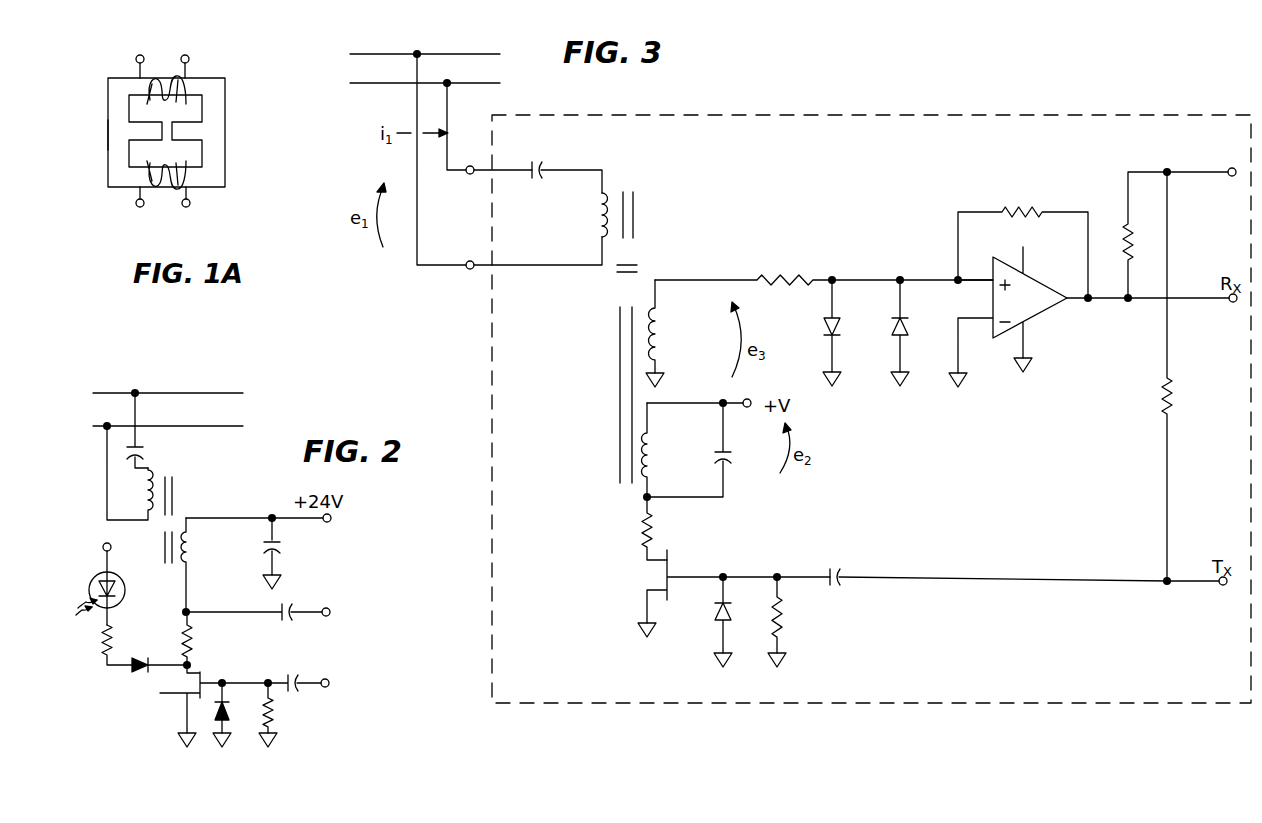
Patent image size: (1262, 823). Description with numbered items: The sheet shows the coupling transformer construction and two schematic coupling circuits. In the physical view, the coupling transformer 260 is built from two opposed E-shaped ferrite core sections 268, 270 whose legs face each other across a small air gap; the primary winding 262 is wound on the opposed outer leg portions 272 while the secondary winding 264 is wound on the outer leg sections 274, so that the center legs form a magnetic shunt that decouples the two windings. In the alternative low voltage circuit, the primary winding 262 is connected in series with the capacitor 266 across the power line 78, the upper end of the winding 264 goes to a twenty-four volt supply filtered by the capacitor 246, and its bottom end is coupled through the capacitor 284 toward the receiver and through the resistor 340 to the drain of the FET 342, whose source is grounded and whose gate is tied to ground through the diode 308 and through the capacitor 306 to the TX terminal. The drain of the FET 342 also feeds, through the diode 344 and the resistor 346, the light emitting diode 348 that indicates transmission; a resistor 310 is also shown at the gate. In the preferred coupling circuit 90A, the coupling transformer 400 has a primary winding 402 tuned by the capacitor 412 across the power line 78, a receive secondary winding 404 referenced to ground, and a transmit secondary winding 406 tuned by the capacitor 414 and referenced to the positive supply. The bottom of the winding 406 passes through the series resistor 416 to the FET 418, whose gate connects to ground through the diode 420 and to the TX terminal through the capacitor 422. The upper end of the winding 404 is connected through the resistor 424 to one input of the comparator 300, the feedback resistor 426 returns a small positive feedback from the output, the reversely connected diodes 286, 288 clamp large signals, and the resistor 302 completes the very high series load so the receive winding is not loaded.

In FIG. 2, the power line 78 is at (229, 378).
In FIG. 3, the power line 78 is at (388, 37).
In FIG. 1A, the coupling transformer 260 is at (276, 144).
In FIG. 2, the coupling transformer 260 is at (212, 501).
In FIG. 1A, the primary winding 262 is at (182, 36).
In FIG. 2, the primary winding 262 is at (130, 473).
In FIG. 1A, the secondary winding 264 is at (180, 197).
In FIG. 2, the secondary winding 264 is at (190, 557).
In FIG. 2, the capacitor 266 is at (143, 450).
In FIG. 1A, the E-shaped ferrite core section 268 is at (115, 135).
In FIG. 1A, the E-shaped ferrite core section 270 is at (220, 110).
In FIG. 1A, the outer leg portions 272 is at (197, 87).
In FIG. 1A, the outer leg sections 274 is at (123, 182).
In FIG. 2, the capacitor 246 is at (280, 544).
In FIG. 2, the capacitor 284 is at (293, 607).
In FIG. 2, the capacitor 306 is at (287, 681).
In FIG. 2, the diode 308 is at (228, 722).
In FIG. 2, the resistor 310 is at (273, 714).
In FIG. 2, the resistor 340 is at (193, 645).
In FIG. 2, the FET 342 is at (189, 706).
In FIG. 2, the diode 344 is at (139, 672).
In FIG. 2, the resistor 346 is at (100, 648).
In FIG. 2, the light emitting diode 348 is at (124, 606).
In FIG. 3, the coupling transformer 400 is at (679, 224).
In FIG. 3, the primary winding 402 is at (600, 230).
In FIG. 3, the receive secondary winding 404 is at (658, 342).
In FIG. 3, the transmit secondary winding 406 is at (652, 460).
In FIG. 3, the capacitor 412 is at (542, 168).
In FIG. 3, the capacitor 414 is at (728, 463).
In FIG. 3, the series resistor 416 is at (653, 532).
In FIG. 3, the FET 418 is at (708, 571).
In FIG. 3, the diode 420 is at (718, 615).
In FIG. 3, the capacitor 422 is at (842, 580).
In FIG. 3, the resistor 424 is at (776, 275).
In FIG. 3, the feedback resistor 426 is at (1006, 214).
In FIG. 3, the diode 286 is at (838, 323).
In FIG. 3, the diode 288 is at (894, 340).
In FIG. 3, the comparator 300 is at (1036, 284).
In FIG. 3, the resistor 302 is at (1125, 226).
In FIG. 3, the coupling circuit 90A is at (871, 409).